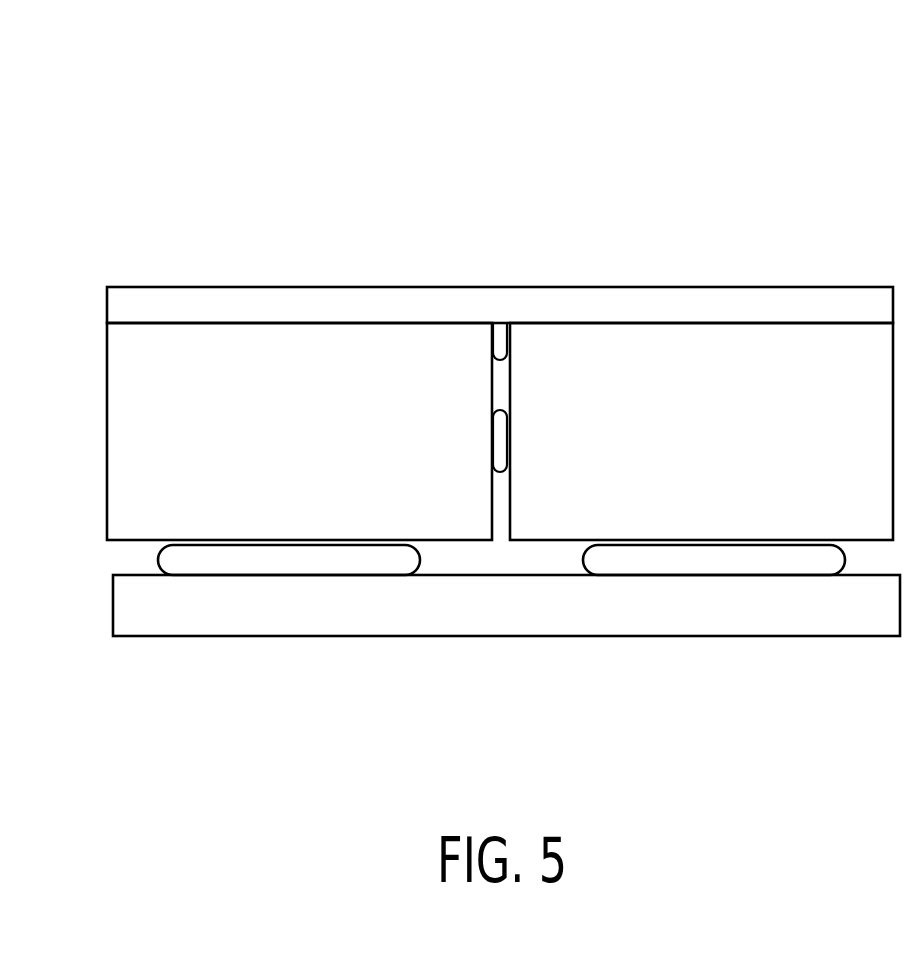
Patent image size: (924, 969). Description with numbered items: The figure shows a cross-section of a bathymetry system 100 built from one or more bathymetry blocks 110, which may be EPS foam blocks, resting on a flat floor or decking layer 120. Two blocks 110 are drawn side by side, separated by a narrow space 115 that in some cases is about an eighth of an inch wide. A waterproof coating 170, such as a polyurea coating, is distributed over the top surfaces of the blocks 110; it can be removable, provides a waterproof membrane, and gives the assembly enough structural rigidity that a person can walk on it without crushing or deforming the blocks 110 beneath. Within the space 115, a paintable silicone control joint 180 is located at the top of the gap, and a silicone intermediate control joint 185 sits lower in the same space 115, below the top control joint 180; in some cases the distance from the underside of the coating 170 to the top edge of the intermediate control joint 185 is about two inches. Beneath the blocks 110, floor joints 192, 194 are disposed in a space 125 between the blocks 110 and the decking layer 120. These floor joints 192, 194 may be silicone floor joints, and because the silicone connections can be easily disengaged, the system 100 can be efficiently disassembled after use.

The bathymetry system 100 is at (223, 147).
The bathymetry blocks 110 is at (320, 431).
The space 115 is at (498, 541).
The decking layer 120 is at (195, 621).
The space 125 is at (565, 563).
The waterproof coating 170 is at (153, 285).
The paintable silicone control joint 180 is at (488, 343).
The intermediate control joint 185 is at (513, 442).
The floor joint 192 is at (277, 578).
The floor joint 194 is at (770, 578).